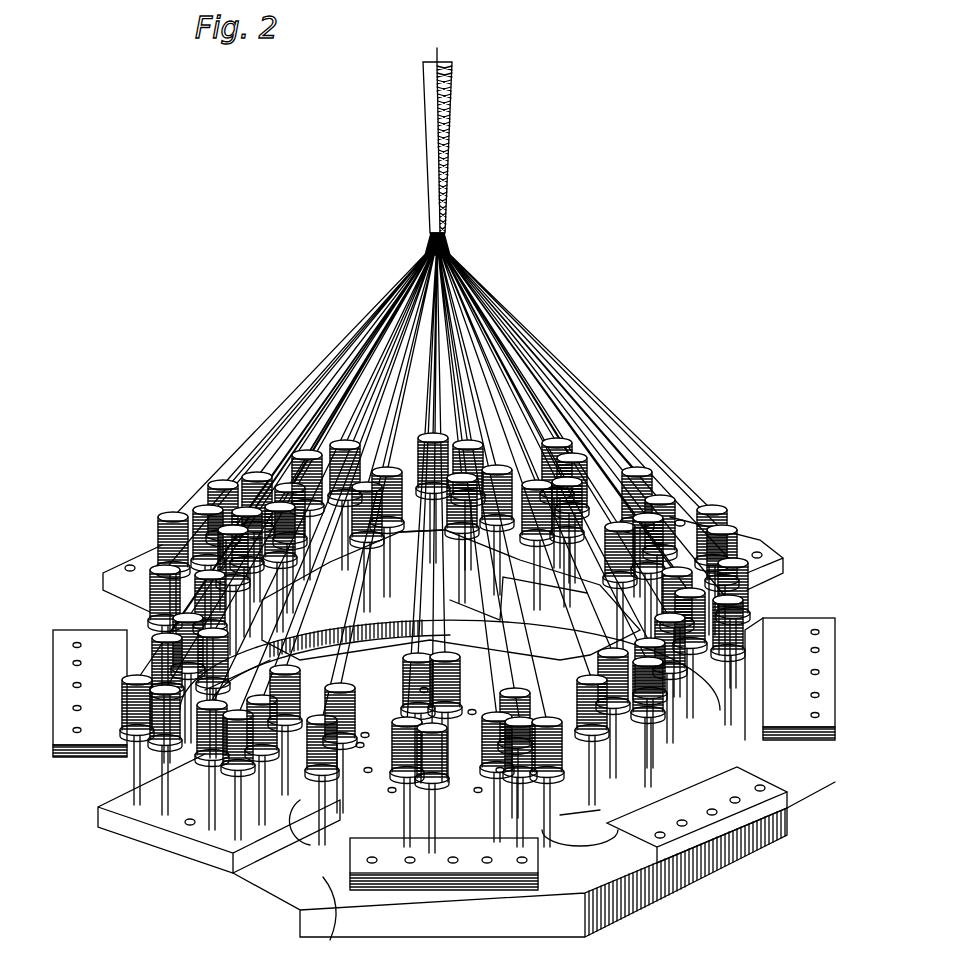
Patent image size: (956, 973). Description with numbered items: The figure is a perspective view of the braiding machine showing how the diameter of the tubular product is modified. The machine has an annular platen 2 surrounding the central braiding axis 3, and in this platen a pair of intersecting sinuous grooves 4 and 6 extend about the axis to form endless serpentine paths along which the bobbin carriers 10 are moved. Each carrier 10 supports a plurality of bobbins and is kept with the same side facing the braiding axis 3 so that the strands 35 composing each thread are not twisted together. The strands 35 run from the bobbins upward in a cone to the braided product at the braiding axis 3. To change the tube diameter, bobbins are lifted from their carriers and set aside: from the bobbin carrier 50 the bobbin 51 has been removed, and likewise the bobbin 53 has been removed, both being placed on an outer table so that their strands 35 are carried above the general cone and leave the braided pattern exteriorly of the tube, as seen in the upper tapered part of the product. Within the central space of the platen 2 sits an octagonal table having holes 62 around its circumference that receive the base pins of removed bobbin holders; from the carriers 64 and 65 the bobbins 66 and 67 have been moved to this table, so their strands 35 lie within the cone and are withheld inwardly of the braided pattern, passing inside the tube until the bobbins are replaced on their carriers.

The platen 2 is at (622, 898).
The central braiding axis 3 is at (455, 165).
The sinuous groove 4 is at (303, 847).
The sinuous groove 6 is at (390, 830).
The bobbin carrier 10 is at (430, 545).
The strand 35 is at (416, 200).
The bobbin carrier 50 is at (275, 802).
The bobbin 51 is at (124, 714).
The bobbin 53 is at (125, 748).
The holes 62 is at (372, 732).
The carrier 64 is at (398, 812).
The carrier 65 is at (320, 900).
The bobbin 66 is at (418, 690).
The bobbin 67 is at (472, 708).